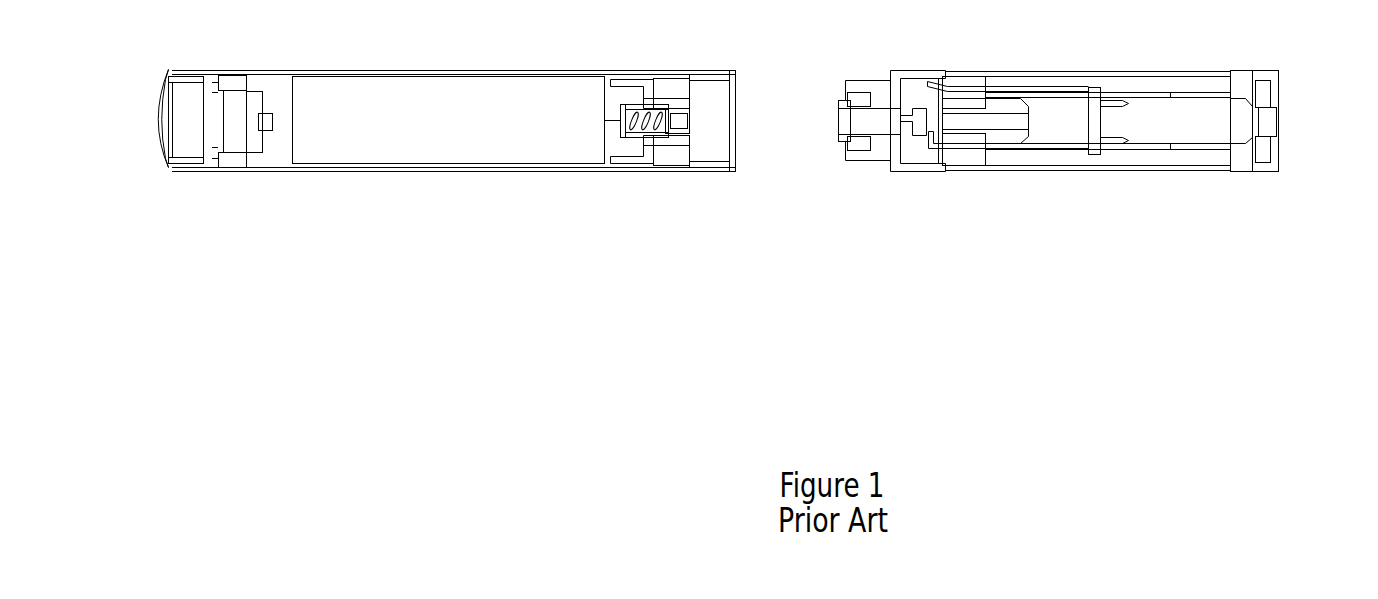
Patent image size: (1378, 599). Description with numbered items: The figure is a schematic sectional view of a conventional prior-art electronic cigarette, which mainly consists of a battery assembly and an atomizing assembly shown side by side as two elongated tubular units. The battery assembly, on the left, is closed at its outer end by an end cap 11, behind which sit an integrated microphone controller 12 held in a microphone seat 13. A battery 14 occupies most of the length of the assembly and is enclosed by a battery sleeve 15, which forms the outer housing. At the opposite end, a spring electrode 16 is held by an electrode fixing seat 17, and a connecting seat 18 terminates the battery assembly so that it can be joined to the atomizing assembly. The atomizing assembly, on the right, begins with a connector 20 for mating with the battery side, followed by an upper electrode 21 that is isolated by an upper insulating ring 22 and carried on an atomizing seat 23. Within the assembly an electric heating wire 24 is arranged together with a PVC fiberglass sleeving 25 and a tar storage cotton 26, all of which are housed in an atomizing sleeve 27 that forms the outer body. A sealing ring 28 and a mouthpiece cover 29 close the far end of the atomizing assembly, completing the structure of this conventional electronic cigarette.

The end cap 11 is at (167, 167).
The integrated microphone controller 12 is at (215, 170).
The microphone seat 13 is at (248, 163).
The battery 14 is at (348, 163).
The battery sleeve 15 is at (438, 170).
The spring electrode 16 is at (622, 168).
The electrode fixing seat 17 is at (650, 168).
The connecting seat 18 is at (730, 170).
The connector 20 is at (852, 165).
The upper electrode 21 is at (858, 165).
The upper insulating ring 22 is at (895, 173).
The atomizing seat 23 is at (950, 172).
The electric heating wire 24 is at (1085, 165).
The PVC fiberglass sleeving 25 is at (1130, 165).
The tar storage cotton 26 is at (1160, 170).
The atomizing sleeve 27 is at (1195, 170).
The sealing ring 28 is at (1248, 170).
The mouthpiece cover 29 is at (1280, 168).